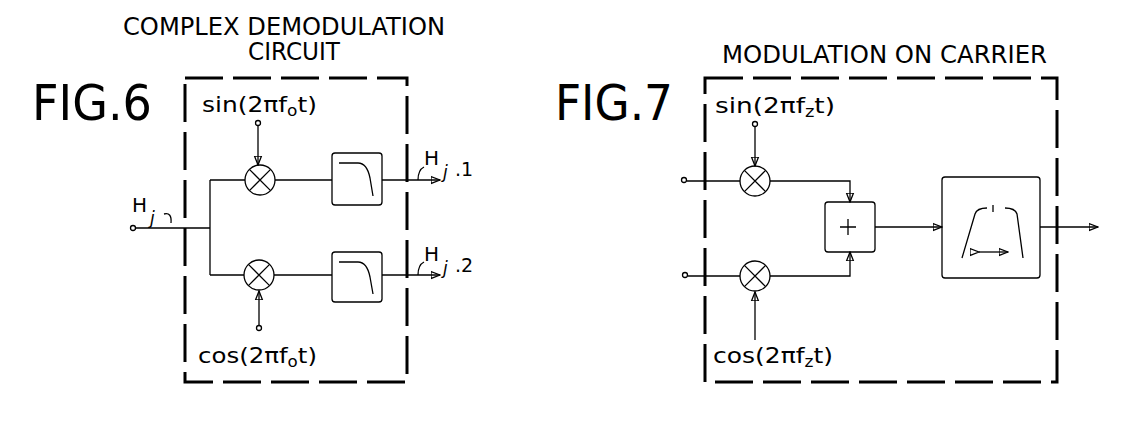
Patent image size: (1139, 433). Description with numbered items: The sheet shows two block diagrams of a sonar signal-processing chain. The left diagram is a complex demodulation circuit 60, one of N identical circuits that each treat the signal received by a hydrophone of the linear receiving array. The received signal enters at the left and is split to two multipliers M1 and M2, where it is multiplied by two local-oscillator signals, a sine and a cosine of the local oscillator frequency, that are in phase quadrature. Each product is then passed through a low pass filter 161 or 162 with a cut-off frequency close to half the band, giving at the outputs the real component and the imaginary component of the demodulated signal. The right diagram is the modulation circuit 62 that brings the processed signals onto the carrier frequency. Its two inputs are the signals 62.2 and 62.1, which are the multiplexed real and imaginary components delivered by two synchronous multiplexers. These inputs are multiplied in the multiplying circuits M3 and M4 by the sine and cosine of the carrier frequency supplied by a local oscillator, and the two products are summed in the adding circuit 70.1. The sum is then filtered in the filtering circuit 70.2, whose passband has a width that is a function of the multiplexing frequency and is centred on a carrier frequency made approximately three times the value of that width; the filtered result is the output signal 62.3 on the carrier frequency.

In FIG. 6, the demodulation circuit 60 is at (411, 346).
In FIG. 6, the low pass filter 161 is at (335, 153).
In FIG. 6, the low pass filter 162 is at (337, 303).
In FIG. 7, the modulation circuit 62 is at (1060, 351).
In FIG. 7, the first multiplexed signal 62.1 is at (691, 273).
In FIG. 7, the second multiplexed signal 62.2 is at (693, 175).
In FIG. 7, the modulated output signal 62.3 is at (1079, 213).
In FIG. 7, the adding circuit 70.1 is at (862, 202).
In FIG. 7, the filtering circuit 70.2 is at (952, 177).
In FIG. 6, the multiplier M1 is at (273, 168).
In FIG. 6, the multiplier M2 is at (272, 263).
In FIG. 7, the multiplying circuit M3 is at (768, 170).
In FIG. 7, the multiplying circuit M4 is at (768, 265).